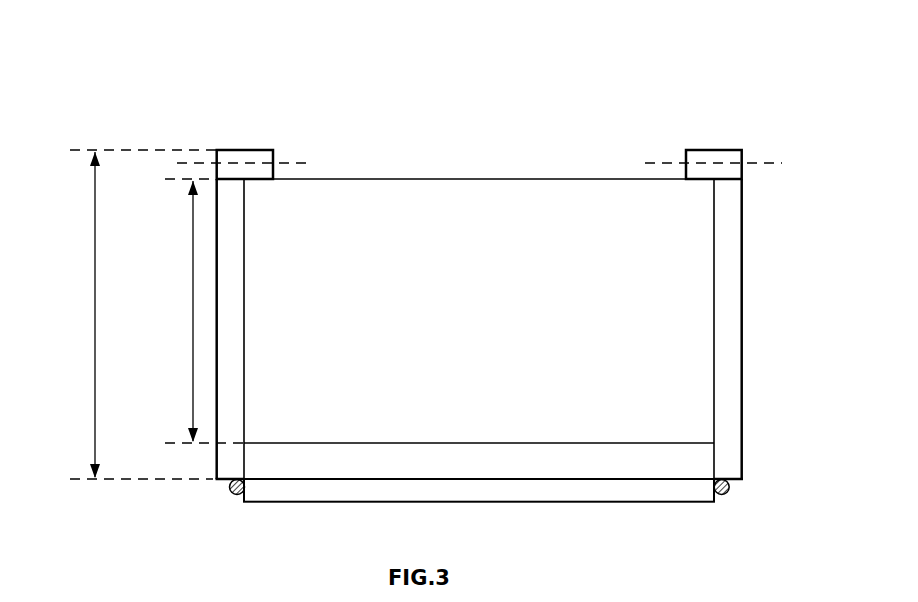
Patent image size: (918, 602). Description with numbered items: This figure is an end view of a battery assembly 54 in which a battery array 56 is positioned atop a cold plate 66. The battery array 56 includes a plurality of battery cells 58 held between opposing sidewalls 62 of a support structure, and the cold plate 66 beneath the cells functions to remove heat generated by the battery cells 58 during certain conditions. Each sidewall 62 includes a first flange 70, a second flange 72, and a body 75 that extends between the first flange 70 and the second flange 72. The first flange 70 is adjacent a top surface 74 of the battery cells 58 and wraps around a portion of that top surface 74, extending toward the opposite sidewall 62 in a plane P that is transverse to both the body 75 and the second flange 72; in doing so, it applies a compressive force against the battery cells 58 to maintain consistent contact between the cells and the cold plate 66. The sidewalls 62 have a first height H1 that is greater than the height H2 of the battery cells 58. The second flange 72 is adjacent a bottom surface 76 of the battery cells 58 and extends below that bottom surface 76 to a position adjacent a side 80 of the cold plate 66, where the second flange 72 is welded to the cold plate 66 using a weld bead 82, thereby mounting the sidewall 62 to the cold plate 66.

The battery assembly 54 is at (505, 88).
The battery array 56 is at (520, 326).
The battery cells 58 is at (493, 320).
The sidewalls 62 is at (490, 322).
The cold plate 66 is at (480, 480).
The first flange 70 is at (242, 150).
The second flange 72 is at (228, 456).
The top surface 74 is at (432, 178).
The body 75 is at (237, 318).
The bottom surface 76 is at (396, 442).
The side 80 is at (244, 460).
The weld bead 82 is at (228, 492).
The first height H1 is at (95, 332).
The height H2 is at (193, 370).
The plane P is at (309, 163).